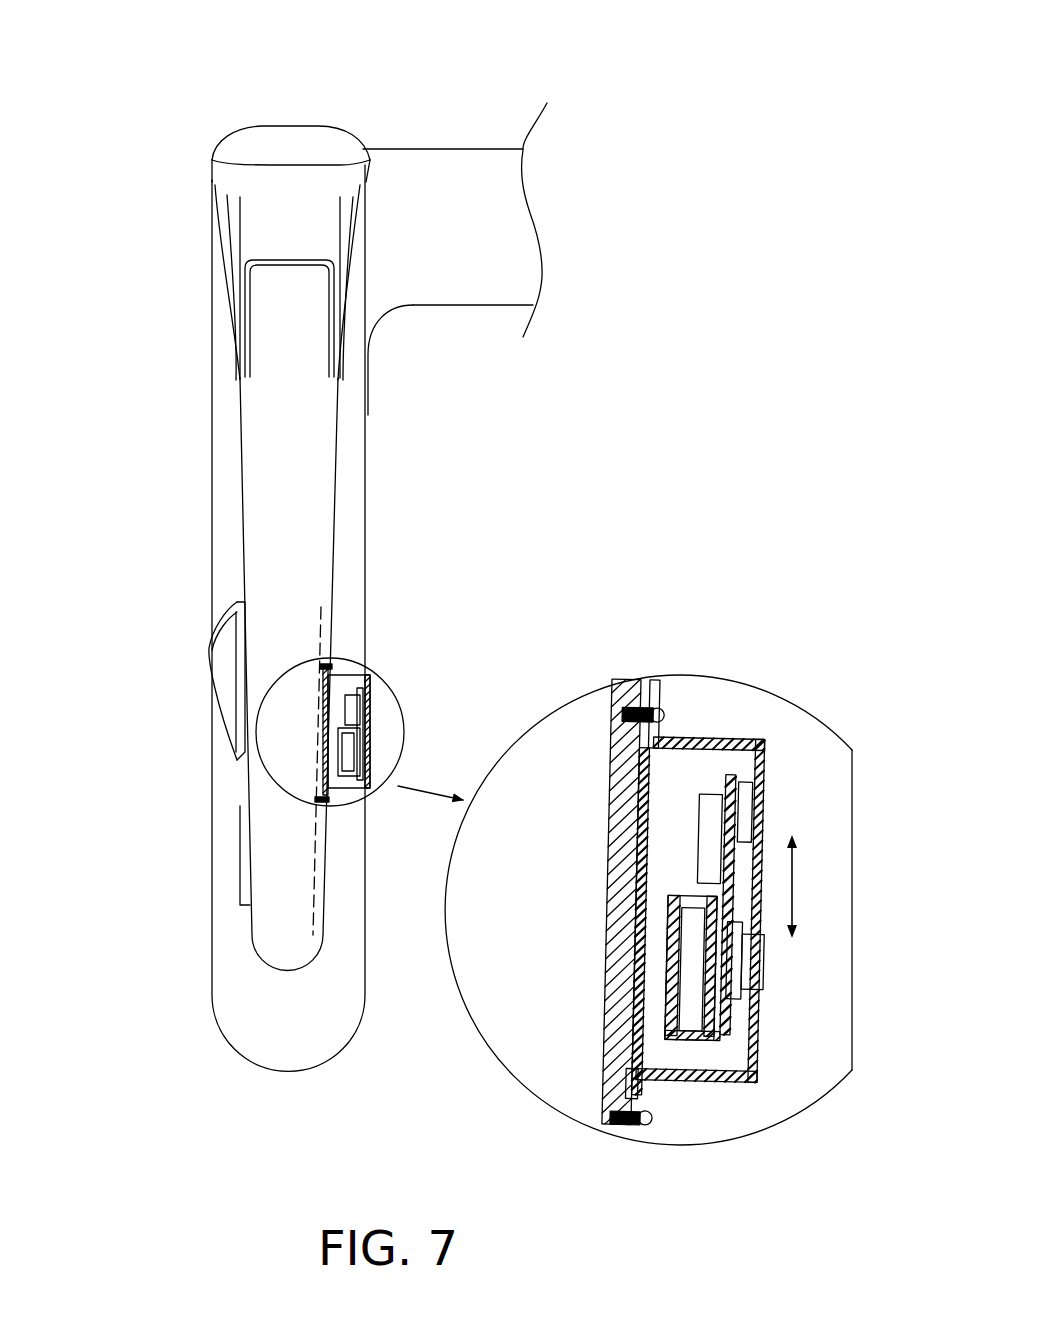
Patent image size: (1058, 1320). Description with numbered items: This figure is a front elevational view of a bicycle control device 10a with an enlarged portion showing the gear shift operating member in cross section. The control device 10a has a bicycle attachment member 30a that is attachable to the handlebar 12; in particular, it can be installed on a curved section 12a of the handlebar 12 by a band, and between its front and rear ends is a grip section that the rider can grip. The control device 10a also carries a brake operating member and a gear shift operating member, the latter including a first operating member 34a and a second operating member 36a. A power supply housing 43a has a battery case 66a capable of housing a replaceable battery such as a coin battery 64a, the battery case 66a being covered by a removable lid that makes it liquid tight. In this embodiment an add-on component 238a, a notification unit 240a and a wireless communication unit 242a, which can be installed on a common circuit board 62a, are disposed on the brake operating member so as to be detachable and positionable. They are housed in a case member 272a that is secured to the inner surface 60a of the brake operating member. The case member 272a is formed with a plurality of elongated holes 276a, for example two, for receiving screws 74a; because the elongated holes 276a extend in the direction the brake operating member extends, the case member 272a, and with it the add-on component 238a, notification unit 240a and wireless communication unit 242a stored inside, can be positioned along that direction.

The control device 10a is at (218, 136).
The handlebar 12 is at (471, 128).
The curved section 12a is at (370, 412).
The bicycle attachment member 30a is at (215, 197).
The first operating member 34a is at (245, 790).
The second operating member 36a is at (212, 650).
The power supply housing 43a is at (669, 1050).
The inner surface 60a is at (330, 635).
The circuit board 62a is at (645, 790).
The coin battery 64a is at (692, 996).
The battery case 66a is at (695, 1047).
The screws 74a is at (622, 700).
The add-on component 238a is at (770, 968).
The notification unit 240a is at (748, 824).
The wireless communication unit 242a is at (710, 835).
The case member 272a is at (764, 1050).
The elongated holes 276a is at (653, 698).